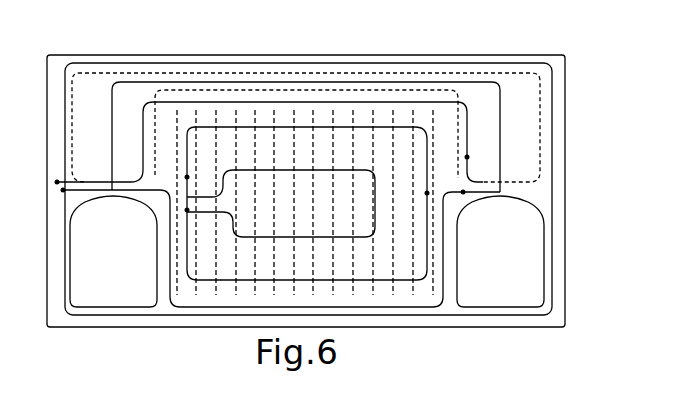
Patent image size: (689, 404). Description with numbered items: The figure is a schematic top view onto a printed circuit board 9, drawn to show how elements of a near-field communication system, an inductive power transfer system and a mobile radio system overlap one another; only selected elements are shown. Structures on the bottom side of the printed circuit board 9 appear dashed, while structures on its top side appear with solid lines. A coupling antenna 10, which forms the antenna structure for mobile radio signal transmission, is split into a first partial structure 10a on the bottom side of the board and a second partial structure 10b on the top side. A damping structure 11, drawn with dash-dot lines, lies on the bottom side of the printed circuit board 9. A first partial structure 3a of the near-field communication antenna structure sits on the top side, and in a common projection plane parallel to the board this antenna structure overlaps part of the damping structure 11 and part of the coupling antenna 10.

The printed circuit board 9 is at (565, 56).
The coupling antenna 10 is at (540, 100).
The first partial structure of the coupling antenna 10a is at (523, 135).
The second partial structure of the coupling antenna 10b is at (530, 257).
The damping structure 11 is at (312, 117).
The first partial structure of the antenna structure for near-field communication 3a is at (410, 316).